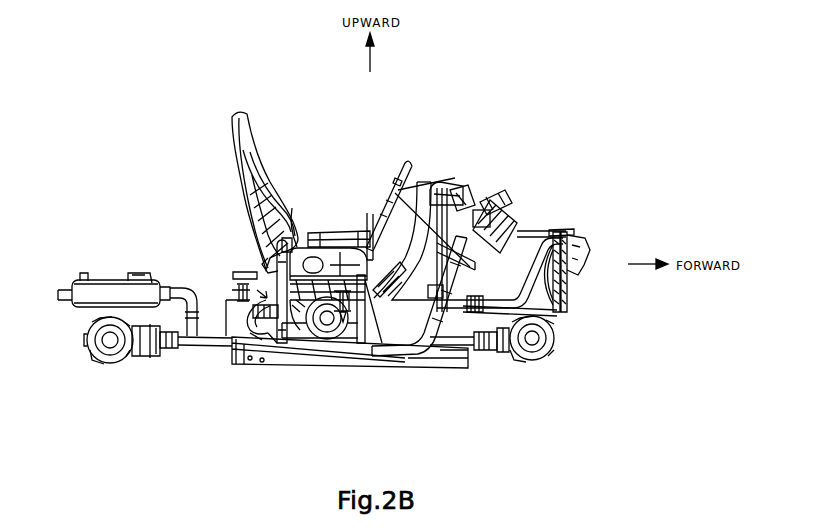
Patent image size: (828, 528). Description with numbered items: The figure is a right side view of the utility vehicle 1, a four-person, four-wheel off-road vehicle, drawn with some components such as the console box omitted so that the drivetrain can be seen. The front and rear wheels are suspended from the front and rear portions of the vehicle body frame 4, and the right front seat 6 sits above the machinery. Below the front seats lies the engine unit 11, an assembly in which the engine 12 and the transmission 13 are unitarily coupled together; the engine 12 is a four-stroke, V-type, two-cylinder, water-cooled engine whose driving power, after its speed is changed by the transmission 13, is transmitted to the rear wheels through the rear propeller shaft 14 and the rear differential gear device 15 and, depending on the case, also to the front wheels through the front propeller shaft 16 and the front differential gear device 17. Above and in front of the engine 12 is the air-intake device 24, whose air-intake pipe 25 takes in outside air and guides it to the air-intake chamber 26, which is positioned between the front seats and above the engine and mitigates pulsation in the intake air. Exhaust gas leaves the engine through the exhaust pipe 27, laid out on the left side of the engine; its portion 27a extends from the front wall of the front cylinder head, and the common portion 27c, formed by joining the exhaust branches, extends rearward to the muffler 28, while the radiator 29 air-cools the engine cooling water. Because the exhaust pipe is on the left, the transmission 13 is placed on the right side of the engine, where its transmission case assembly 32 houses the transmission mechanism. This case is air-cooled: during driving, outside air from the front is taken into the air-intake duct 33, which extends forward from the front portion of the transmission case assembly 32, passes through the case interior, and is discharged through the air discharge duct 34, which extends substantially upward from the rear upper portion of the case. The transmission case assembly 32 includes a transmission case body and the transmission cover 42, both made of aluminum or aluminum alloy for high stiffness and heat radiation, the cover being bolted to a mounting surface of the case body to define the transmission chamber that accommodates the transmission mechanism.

The utility vehicle 1 is at (569, 89).
The vehicle body frame 4 is at (258, 258).
The right front seat 6 is at (251, 128).
The engine unit 11 is at (364, 419).
The engine 12 is at (350, 362).
The transmission 13 is at (298, 362).
The rear propeller shaft 14 is at (164, 366).
The rear differential gear device 15 is at (110, 368).
The front propeller shaft 16 is at (462, 372).
The front differential gear device 17 is at (530, 360).
The air-intake device 24 is at (354, 231).
The air-intake pipe 25 is at (416, 240).
The air-intake chamber 26 is at (338, 234).
The exhaust pipe 27 is at (188, 290).
The portion of exhaust pipe 27a is at (400, 366).
The common portion 27c is at (190, 366).
The muffler 28 is at (118, 290).
The radiator 29 is at (568, 296).
The transmission case assembly 32 is at (248, 368).
The air-intake duct 33 is at (418, 366).
The air discharge duct 34 is at (303, 236).
The transmission cover 42 is at (350, 352).